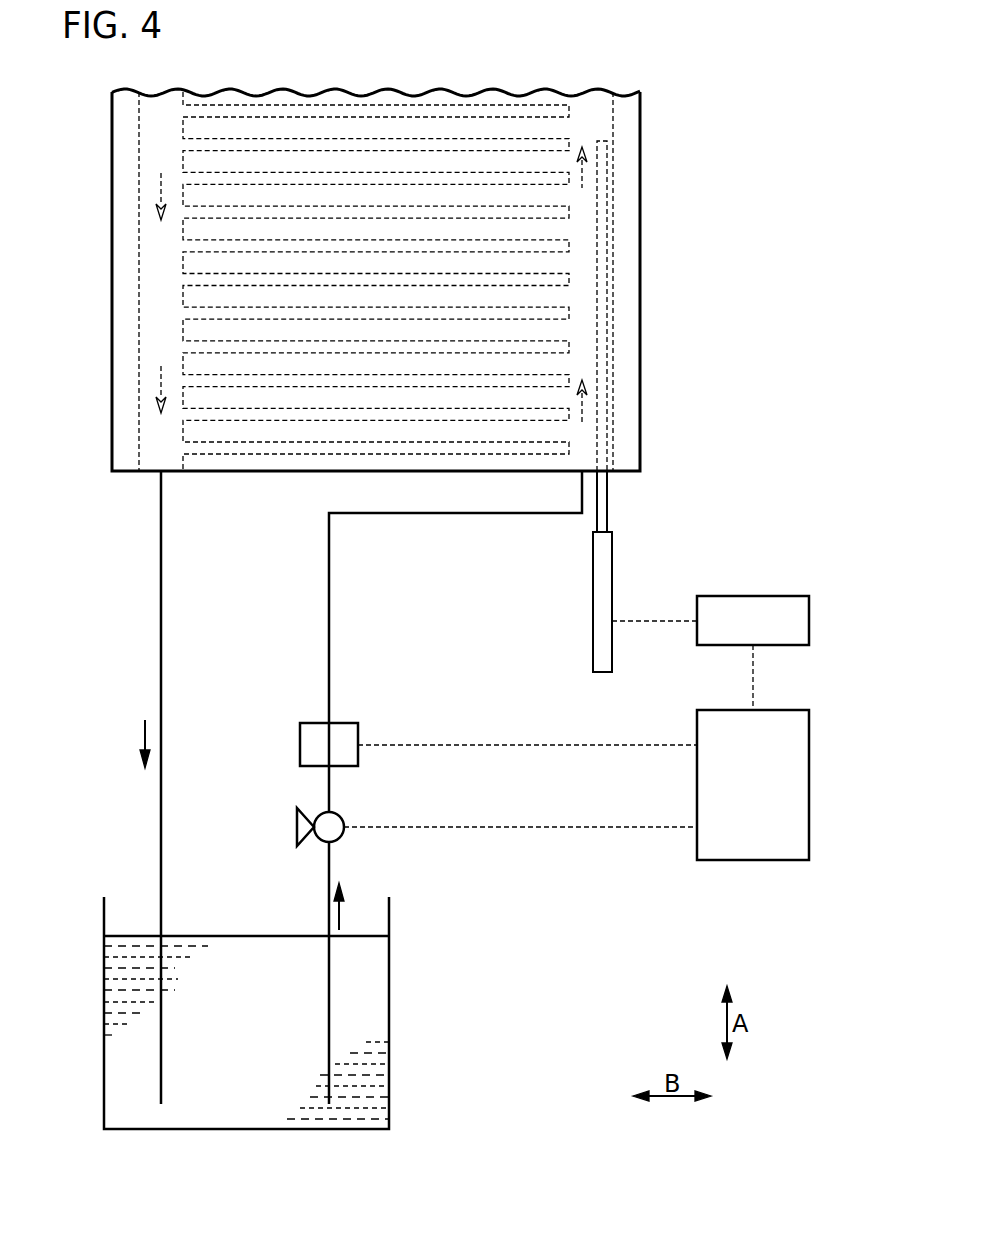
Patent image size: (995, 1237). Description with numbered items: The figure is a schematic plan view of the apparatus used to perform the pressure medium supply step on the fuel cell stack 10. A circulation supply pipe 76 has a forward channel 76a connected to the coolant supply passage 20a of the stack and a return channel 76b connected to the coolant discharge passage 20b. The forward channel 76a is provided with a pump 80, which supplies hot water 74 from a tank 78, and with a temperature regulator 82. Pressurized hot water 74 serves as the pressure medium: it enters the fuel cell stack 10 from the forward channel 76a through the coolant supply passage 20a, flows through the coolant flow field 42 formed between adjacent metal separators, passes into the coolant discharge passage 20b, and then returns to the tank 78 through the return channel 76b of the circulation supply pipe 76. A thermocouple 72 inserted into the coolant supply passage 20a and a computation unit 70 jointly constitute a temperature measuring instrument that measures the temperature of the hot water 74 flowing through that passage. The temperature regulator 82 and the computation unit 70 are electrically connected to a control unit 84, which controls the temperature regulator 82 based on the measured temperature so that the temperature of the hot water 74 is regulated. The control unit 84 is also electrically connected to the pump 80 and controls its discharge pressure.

The fuel cell stack 10 is at (640, 76).
The coolant supply passage 20a is at (593, 126).
The coolant discharge passage 20b is at (155, 131).
The coolant flow field 42 is at (548, 213).
The thermocouple 72 is at (601, 439).
The circulation supply pipe 76 is at (371, 787).
The forward channel 76a is at (329, 550).
The return channel 76b is at (162, 622).
The temperature regulator 82 is at (358, 723).
The pump 80 is at (342, 816).
The tank 78 is at (389, 980).
The hot water 74 is at (378, 1082).
The computation unit 70 is at (809, 615).
The control unit 84 is at (809, 730).